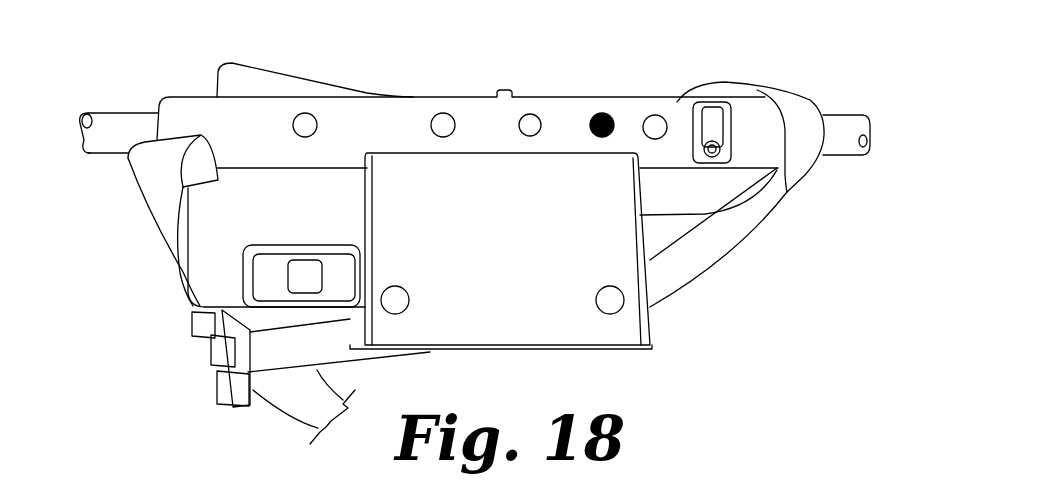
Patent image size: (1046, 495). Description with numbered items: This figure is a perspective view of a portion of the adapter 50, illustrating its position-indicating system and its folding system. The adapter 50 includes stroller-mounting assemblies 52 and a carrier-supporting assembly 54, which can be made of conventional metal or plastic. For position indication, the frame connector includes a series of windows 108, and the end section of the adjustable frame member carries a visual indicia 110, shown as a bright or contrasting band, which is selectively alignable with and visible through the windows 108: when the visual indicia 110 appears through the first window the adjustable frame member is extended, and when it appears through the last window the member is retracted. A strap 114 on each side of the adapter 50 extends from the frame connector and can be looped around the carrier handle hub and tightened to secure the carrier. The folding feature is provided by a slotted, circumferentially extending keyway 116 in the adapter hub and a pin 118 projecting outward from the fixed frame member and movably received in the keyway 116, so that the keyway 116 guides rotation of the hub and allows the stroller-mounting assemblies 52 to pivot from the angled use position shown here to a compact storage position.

The adapter 50 is at (820, 70).
The stroller-mounting assembly 52 is at (655, 333).
The carrier-supporting assembly 54 is at (847, 110).
The windows 108 is at (440, 118).
The visual indicia 110 is at (598, 113).
The strap 114 is at (775, 87).
The keyway 116 is at (712, 108).
The pin 118 is at (716, 153).